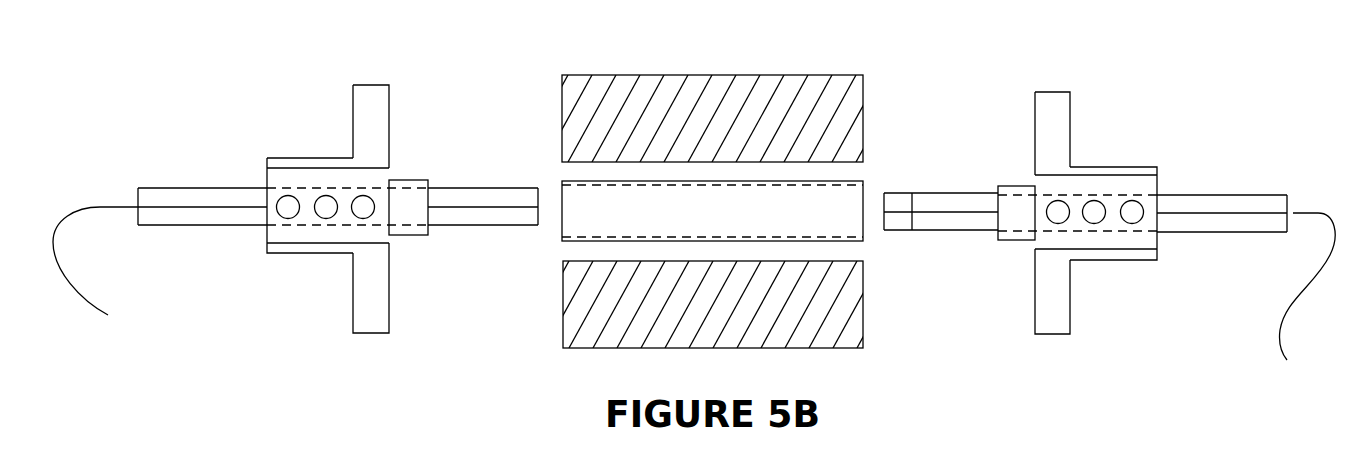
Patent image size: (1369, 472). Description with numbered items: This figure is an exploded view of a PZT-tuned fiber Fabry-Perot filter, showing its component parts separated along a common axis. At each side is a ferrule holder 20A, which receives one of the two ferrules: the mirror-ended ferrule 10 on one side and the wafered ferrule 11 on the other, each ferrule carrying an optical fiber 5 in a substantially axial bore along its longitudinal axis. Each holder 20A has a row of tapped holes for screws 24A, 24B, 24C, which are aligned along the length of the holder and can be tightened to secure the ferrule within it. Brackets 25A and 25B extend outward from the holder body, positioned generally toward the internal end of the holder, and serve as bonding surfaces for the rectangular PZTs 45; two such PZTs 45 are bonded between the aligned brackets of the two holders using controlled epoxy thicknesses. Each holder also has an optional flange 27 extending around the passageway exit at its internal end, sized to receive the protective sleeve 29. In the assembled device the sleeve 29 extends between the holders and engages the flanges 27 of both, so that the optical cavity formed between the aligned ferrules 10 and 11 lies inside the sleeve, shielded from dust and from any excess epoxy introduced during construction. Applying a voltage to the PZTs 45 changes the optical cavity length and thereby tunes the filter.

The optical fiber 5 is at (112, 206).
The mirror-ended ferrule 10 is at (222, 188).
The wafered ferrule 11 is at (1190, 195).
The ferrule holder 20A is at (312, 362).
The screw 24A is at (288, 215).
The screw 24B is at (326, 218).
The screw 24C is at (363, 218).
The bracket 25A is at (360, 85).
The bracket 25B is at (375, 305).
The flange 27 is at (408, 210).
The sleeve 29 is at (838, 215).
The rectangular PZT 45 is at (703, 120).